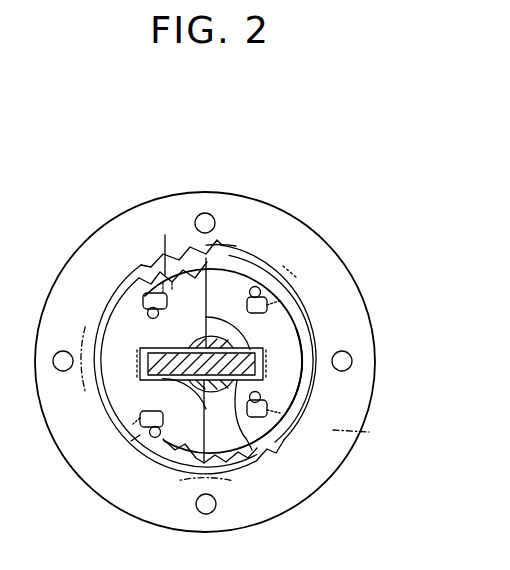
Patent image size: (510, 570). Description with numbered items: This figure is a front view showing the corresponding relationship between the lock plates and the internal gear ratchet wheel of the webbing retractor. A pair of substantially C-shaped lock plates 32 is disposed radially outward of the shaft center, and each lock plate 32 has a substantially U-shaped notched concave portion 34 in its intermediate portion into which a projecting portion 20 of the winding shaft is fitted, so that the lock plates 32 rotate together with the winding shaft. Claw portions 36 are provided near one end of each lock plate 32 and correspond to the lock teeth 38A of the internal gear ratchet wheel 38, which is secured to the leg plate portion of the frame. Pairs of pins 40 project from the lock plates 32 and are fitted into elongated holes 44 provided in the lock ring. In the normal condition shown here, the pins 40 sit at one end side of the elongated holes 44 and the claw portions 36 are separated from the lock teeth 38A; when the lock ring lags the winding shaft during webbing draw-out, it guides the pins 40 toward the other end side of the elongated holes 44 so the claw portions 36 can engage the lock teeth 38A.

The projecting portions 20 is at (248, 342).
The lock plates 32 is at (110, 393).
The notched concave portion 34 is at (163, 346).
The claw portions 36 is at (153, 265).
The internal gear ratchet wheel 38 is at (366, 334).
The lock teeth 38A is at (226, 250).
The pins 40 is at (150, 294).
The elongated holes 44 is at (117, 450).